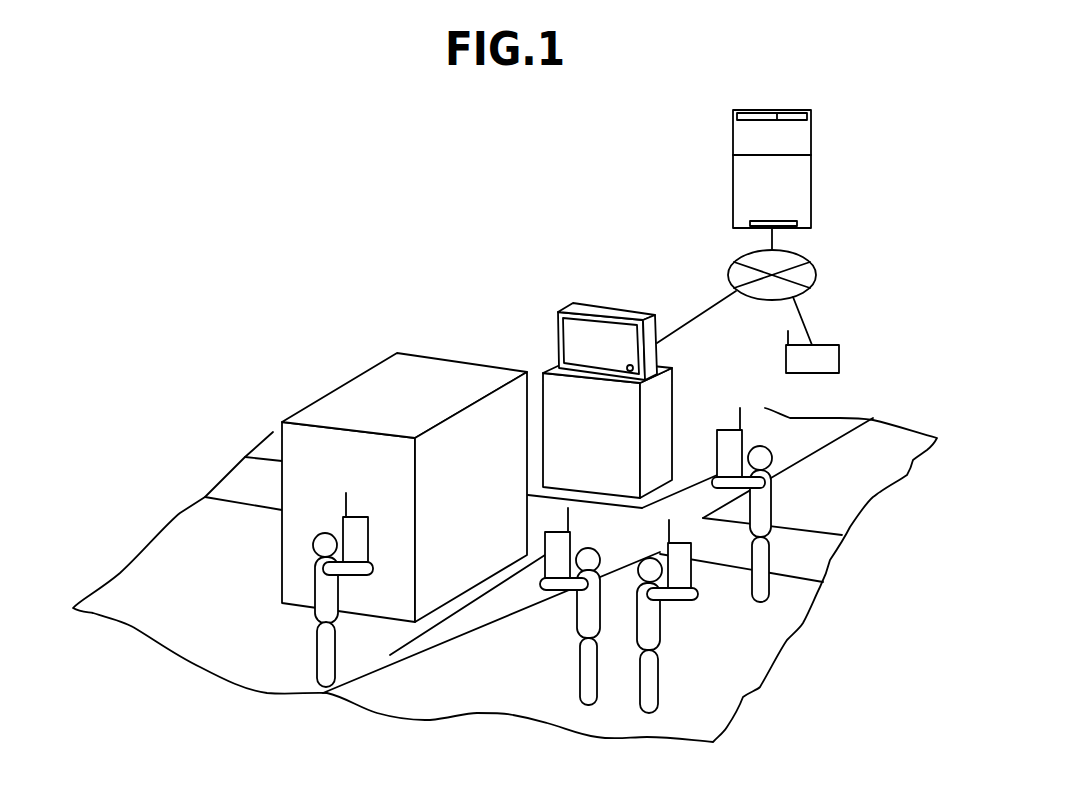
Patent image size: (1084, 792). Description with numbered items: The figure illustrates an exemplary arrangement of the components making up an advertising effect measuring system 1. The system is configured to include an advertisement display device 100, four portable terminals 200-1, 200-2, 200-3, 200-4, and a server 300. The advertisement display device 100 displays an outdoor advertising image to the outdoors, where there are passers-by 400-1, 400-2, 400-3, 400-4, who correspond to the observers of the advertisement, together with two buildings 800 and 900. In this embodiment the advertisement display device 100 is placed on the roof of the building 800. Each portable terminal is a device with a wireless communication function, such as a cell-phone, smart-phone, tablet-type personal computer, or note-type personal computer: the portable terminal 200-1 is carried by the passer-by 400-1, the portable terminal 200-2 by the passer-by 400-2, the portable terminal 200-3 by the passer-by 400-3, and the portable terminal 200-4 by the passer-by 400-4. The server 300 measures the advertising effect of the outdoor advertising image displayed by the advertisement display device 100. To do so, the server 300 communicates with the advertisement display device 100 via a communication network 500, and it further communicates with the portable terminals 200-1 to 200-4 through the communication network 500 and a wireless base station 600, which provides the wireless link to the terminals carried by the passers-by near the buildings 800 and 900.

The advertising effect measuring system 1 is at (536, 140).
The advertisement display device 100 is at (600, 308).
The portable terminal 200-1 is at (742, 447).
The portable terminal 200-2 is at (690, 575).
The portable terminal 200-3 is at (543, 557).
The portable terminal 200-4 is at (368, 530).
The server 300 is at (811, 137).
The passer-by 400-1 is at (763, 505).
The passer-by 400-2 is at (648, 623).
The passer-by 400-3 is at (582, 623).
The passer-by 400-4 is at (322, 593).
The communication network 500 is at (816, 272).
The wireless base station 600 is at (839, 360).
The building 800 is at (672, 388).
The building 900 is at (437, 357).